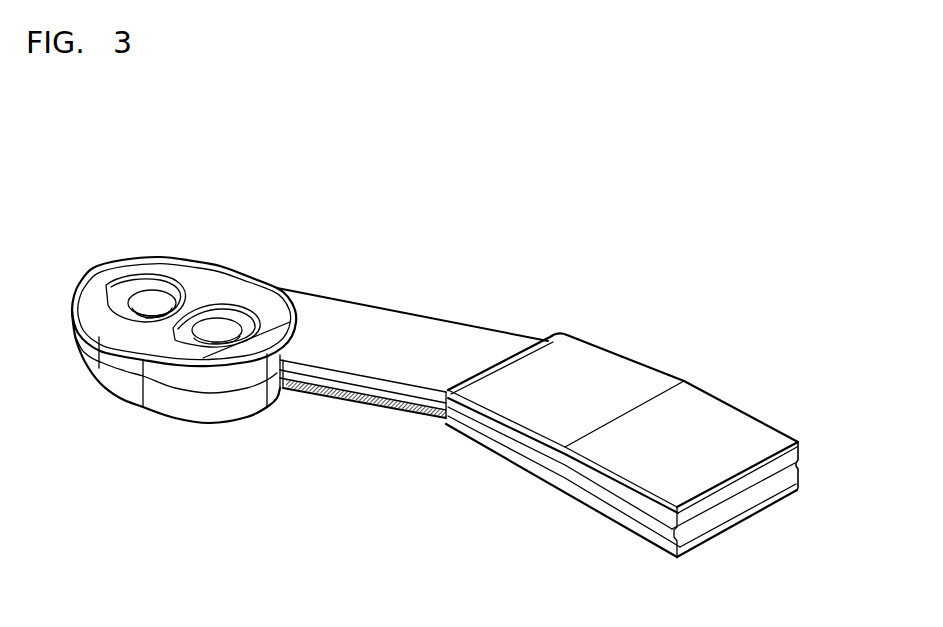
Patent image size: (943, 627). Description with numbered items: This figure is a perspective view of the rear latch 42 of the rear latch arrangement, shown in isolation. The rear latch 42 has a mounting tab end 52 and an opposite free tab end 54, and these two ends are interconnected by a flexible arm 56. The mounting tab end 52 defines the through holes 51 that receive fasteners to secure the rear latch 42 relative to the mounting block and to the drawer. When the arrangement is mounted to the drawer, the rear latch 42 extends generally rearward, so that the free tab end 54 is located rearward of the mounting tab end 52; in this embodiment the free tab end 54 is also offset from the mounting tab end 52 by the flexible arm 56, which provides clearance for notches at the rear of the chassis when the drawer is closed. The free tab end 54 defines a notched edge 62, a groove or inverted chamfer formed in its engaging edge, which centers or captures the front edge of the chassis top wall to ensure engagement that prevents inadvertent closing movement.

The rear latch 42 is at (459, 374).
The through holes 51 is at (212, 330).
The mounting tab end 52 is at (210, 290).
The free tab end 54 is at (737, 430).
The flexible arm 56 is at (403, 338).
The notched edge 62 is at (775, 492).